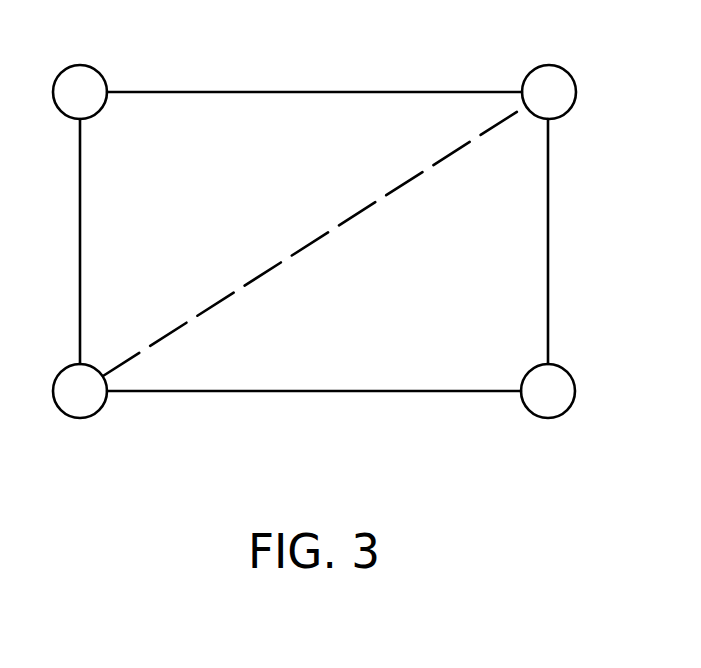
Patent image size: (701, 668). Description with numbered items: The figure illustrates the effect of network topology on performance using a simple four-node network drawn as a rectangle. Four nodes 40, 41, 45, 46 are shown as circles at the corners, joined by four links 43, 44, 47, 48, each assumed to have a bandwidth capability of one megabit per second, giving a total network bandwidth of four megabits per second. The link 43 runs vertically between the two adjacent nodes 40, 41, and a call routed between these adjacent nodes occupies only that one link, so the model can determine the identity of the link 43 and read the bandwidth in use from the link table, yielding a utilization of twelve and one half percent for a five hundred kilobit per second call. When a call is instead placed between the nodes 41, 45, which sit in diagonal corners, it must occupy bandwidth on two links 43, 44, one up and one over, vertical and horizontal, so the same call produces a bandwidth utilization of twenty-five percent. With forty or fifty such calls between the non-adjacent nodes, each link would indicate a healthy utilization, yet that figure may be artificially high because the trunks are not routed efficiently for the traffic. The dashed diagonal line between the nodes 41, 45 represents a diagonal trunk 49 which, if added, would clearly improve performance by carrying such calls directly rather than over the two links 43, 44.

The node 40 is at (85, 65).
The node 41 is at (75, 417).
The node 45 is at (568, 73).
The node 46 is at (574, 383).
The link 43 is at (79, 245).
The link 44 is at (323, 91).
The link 47 is at (320, 393).
The link 48 is at (549, 287).
The diagonal trunk 49 is at (335, 235).